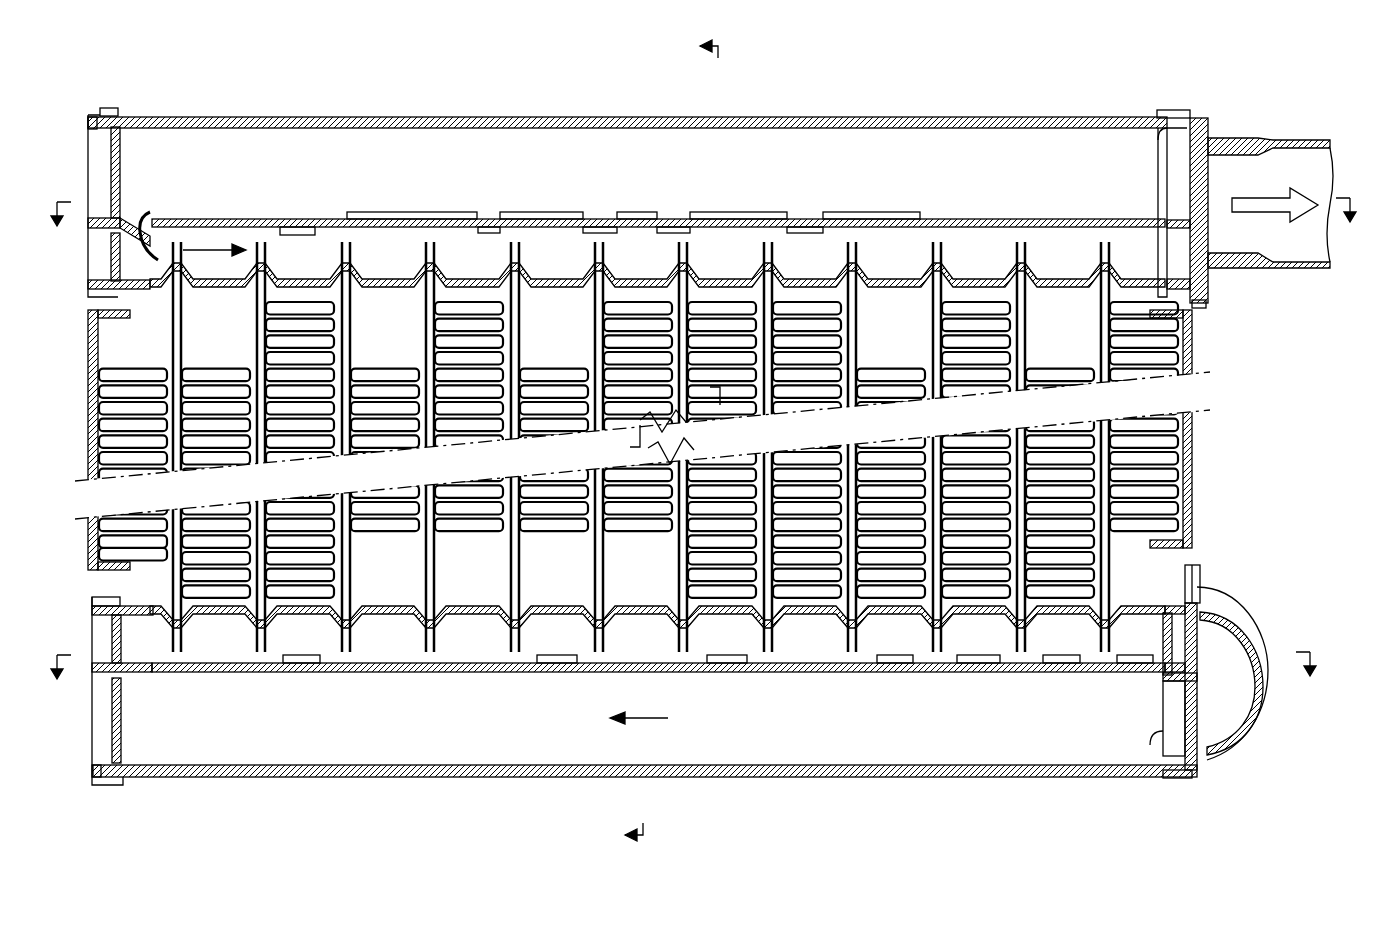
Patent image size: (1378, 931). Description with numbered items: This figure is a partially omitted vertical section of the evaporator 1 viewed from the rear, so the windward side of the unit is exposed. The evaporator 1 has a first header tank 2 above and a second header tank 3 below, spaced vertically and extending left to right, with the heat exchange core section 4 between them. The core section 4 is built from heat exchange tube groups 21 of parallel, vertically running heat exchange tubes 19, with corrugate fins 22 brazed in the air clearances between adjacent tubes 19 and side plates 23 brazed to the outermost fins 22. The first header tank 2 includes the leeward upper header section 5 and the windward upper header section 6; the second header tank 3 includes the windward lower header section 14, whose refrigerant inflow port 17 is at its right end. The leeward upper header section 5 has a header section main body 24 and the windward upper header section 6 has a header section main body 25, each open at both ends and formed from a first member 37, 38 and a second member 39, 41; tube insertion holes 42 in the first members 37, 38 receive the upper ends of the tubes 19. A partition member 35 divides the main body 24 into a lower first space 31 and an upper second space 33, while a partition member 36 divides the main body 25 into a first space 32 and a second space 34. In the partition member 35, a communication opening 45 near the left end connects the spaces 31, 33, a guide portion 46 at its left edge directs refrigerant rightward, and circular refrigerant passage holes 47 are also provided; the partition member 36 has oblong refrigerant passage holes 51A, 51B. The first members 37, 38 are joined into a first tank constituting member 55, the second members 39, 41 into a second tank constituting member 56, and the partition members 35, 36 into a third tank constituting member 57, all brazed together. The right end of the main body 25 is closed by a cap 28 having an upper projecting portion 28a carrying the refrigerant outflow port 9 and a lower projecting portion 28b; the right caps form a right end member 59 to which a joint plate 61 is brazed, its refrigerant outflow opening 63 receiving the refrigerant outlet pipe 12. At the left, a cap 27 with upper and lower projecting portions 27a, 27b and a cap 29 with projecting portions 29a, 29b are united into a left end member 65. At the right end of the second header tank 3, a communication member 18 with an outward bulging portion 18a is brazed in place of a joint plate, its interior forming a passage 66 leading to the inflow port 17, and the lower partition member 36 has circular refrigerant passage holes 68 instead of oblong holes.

The evaporator 1 is at (1032, 56).
The first header tank 2 is at (565, 98).
The second header tank 3 is at (1023, 790).
The heat exchange core section 4 is at (1200, 462).
The leeward upper header section 5 is at (292, 117).
The windward upper header section 6 is at (941, 117).
The refrigerant outflow port 9 is at (1156, 126).
The refrigerant outlet pipe 12 is at (1290, 267).
The windward lower header section 14 is at (890, 777).
The refrigerant inflow port 17 is at (1170, 765).
The communication member 18 is at (1252, 680).
The outward bulging portion 18a is at (1258, 737).
The heat exchange tubes 19 is at (910, 300).
The heat exchange tube groups 21 is at (172, 574).
The corrugate fins 22 is at (1200, 428).
The side plates 23 is at (88, 400).
The header section main body 24 is at (188, 117).
The header section main body 25 is at (445, 117).
The cap 27 is at (92, 118).
The upper projecting portion 27a is at (111, 166).
The lower projecting portion 27b is at (112, 264).
The cap 28 is at (1182, 110).
The upper projecting portion 28a is at (1157, 140).
The lower projecting portion 28b is at (1160, 240).
The cap 29 is at (135, 778).
The upper projecting portion 29a is at (112, 740).
The lower projecting portion 29b is at (112, 632).
The first space 31 is at (213, 220).
The first space 32 is at (490, 222).
The second space 33 is at (332, 265).
The second space 34 is at (758, 117).
The partition member 35 is at (235, 220).
The partition member 36 is at (680, 222).
The first member 37 is at (218, 289).
The first member 38 is at (385, 289).
The second member 39 is at (240, 117).
The second member 41 is at (885, 117).
The tube insertion holes 42 is at (1040, 322).
The communication opening 45 is at (170, 228).
The guide portion 46 is at (150, 290).
The refrigerant passage holes 47 is at (302, 228).
The oblong refrigerant passage holes 51A is at (668, 222).
The oblong refrigerant passage holes 51B is at (790, 222).
The first tank constituting member 55 is at (560, 288).
The second tank constituting member 56 is at (508, 117).
The third tank constituting member 57 is at (975, 220).
The right end member 59 is at (1198, 306).
The joint plate 61 is at (1210, 138).
The refrigerant outflow opening 63 is at (1255, 138).
The left end member 65 is at (112, 108).
The passage 66 is at (1228, 750).
The circular refrigerant passage holes 68 is at (305, 672).